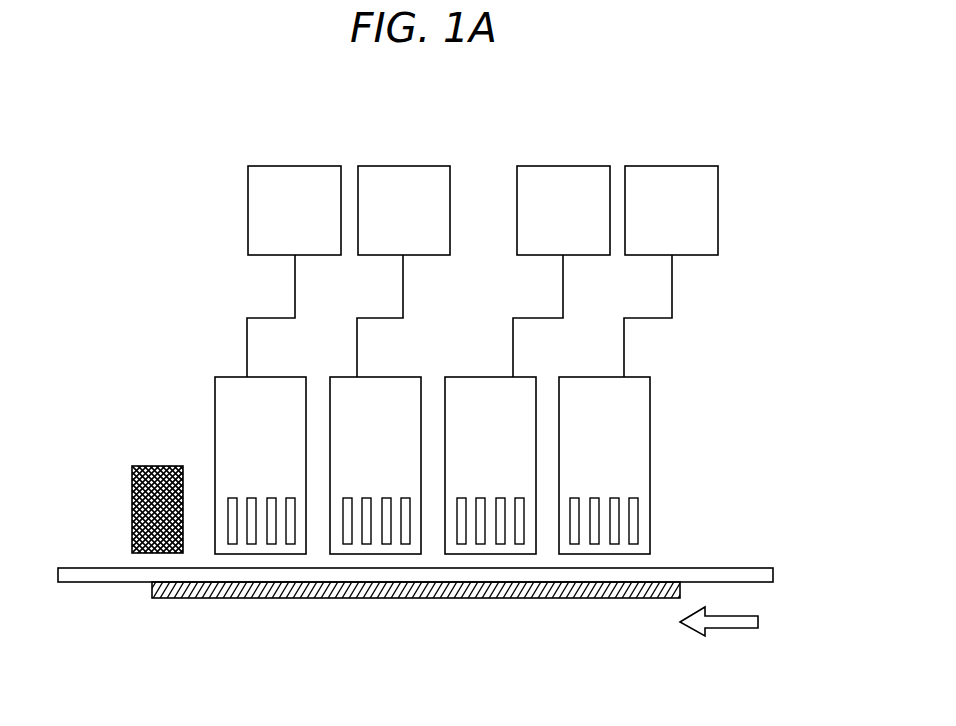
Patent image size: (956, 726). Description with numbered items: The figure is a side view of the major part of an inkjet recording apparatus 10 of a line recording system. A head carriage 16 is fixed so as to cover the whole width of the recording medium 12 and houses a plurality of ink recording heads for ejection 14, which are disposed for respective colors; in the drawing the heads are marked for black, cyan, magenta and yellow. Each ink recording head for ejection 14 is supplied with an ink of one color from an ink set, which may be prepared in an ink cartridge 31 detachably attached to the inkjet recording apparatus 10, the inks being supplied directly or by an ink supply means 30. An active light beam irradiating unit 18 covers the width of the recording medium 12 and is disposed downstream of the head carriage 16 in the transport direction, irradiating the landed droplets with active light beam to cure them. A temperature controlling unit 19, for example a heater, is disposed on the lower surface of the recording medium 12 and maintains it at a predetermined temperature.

The inkjet recording apparatus 10 is at (778, 333).
The recording medium 12 is at (743, 575).
The ink recording heads for ejection 14 is at (634, 514).
The head carriage 16 is at (602, 377).
The active light beam irradiating unit 18 is at (156, 466).
The temperature controlling unit 19 is at (565, 600).
The ink supply means 30 is at (675, 293).
The ink cartridge 31 is at (672, 166).